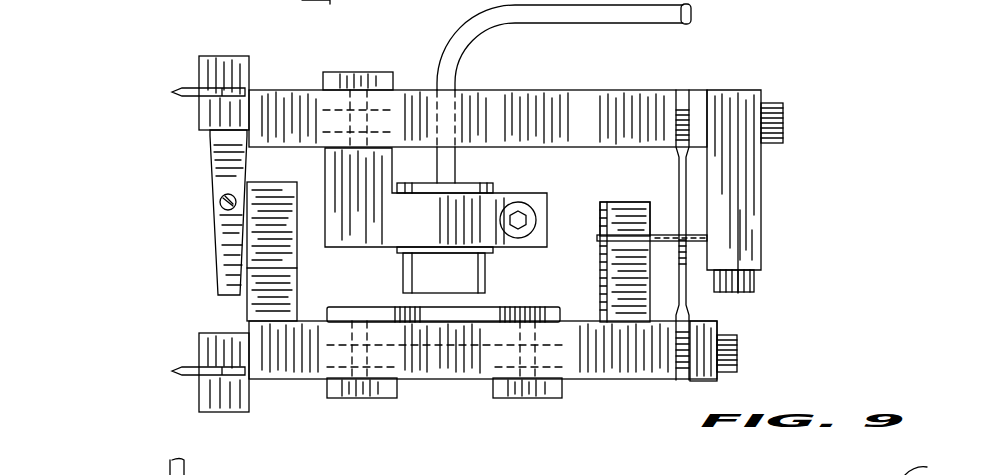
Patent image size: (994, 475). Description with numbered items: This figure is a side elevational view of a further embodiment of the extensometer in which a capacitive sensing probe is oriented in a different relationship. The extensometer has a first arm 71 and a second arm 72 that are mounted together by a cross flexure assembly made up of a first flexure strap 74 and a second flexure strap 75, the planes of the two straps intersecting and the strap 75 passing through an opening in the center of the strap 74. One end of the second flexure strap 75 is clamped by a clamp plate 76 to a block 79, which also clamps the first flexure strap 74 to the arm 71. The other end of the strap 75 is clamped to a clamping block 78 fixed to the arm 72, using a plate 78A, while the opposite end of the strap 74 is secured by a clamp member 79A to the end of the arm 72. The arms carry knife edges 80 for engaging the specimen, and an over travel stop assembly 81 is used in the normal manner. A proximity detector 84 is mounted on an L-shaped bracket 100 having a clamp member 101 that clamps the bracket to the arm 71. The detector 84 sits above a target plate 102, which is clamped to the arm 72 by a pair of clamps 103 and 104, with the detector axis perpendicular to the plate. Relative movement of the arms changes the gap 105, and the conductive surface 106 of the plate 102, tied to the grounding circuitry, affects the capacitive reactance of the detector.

The first arm 71 is at (535, 108).
The second arm 72 is at (616, 365).
The first flexure strap 74 is at (680, 94).
The second flexure strap 75 is at (600, 236).
The clamp plate 76 is at (747, 254).
The clamping block 78 is at (606, 268).
The plate 78A is at (660, 195).
The block 79 is at (748, 173).
The clamp member 79A is at (708, 325).
The knife edges 80 is at (190, 88).
The over travel stop assembly 81 is at (290, 212).
The proximity detector 84 is at (480, 187).
The L-shaped bracket 100 is at (550, 193).
The clamp member 101 is at (362, 72).
The target plate 102 is at (568, 316).
The clamp 103 is at (498, 398).
The clamp 104 is at (368, 398).
The gap 105 is at (420, 298).
The conductive surface 106 is at (480, 307).